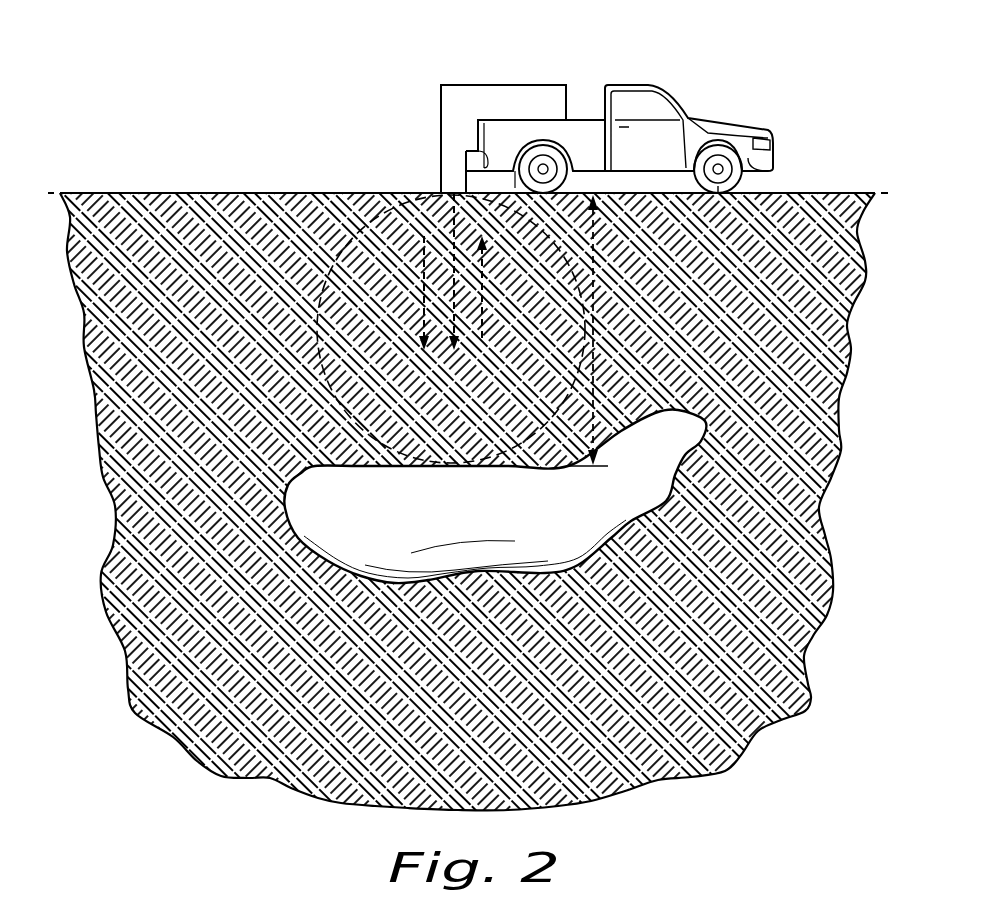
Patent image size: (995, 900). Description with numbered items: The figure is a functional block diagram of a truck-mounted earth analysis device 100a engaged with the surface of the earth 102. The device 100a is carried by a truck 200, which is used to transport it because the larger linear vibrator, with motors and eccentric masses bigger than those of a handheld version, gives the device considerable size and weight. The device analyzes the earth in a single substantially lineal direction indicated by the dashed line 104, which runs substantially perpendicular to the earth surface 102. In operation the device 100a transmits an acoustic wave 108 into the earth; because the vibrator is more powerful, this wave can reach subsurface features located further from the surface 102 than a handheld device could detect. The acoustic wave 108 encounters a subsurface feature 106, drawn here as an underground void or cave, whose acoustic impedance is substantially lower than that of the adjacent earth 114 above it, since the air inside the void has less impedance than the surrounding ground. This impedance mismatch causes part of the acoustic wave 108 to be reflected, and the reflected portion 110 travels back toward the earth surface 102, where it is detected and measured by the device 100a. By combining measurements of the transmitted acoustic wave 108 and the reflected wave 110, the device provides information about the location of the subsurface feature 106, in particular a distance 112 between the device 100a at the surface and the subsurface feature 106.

The surface of the earth 102 is at (176, 185).
The truck-mounted earth analysis device 100a is at (496, 66).
The truck 200 is at (630, 62).
The dashed line 104 is at (417, 197).
The subsurface feature 106 is at (375, 460).
The acoustic wave 108 is at (357, 213).
The reflected portion 110 is at (438, 362).
The distance 112 is at (612, 425).
The adjacent earth 114 is at (252, 207).